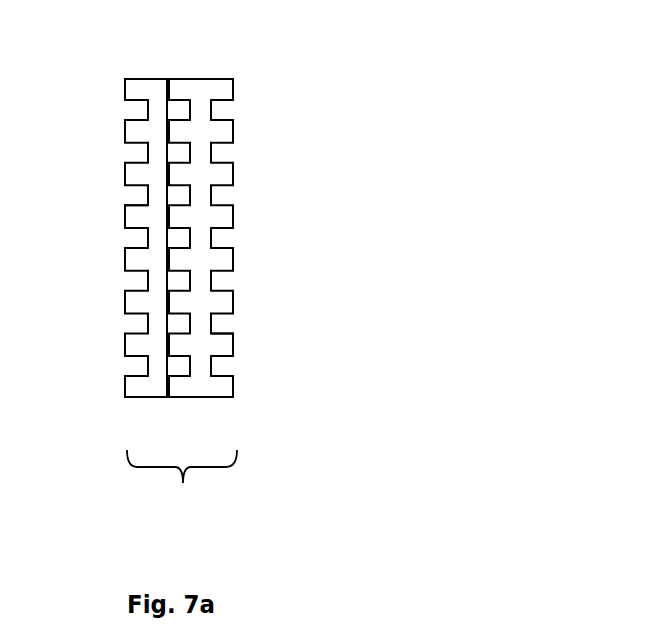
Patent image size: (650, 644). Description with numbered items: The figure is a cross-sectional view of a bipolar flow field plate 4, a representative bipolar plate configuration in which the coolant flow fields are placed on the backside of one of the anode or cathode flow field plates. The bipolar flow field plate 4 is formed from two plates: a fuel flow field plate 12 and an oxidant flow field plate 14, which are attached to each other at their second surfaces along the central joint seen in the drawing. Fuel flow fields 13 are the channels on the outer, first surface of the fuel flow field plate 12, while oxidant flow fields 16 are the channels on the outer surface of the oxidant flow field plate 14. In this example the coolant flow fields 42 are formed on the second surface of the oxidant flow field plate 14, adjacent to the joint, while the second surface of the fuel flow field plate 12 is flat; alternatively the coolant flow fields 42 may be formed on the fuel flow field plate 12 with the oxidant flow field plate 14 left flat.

The fuel flow field plate 12 is at (145, 77).
The oxidant flow field plate 14 is at (218, 77).
The fuel flow fields 13 is at (128, 238).
The coolant flow fields 42 is at (185, 365).
The oxidant flow fields 16 is at (230, 367).
The bipolar flow field plate 4 is at (182, 487).